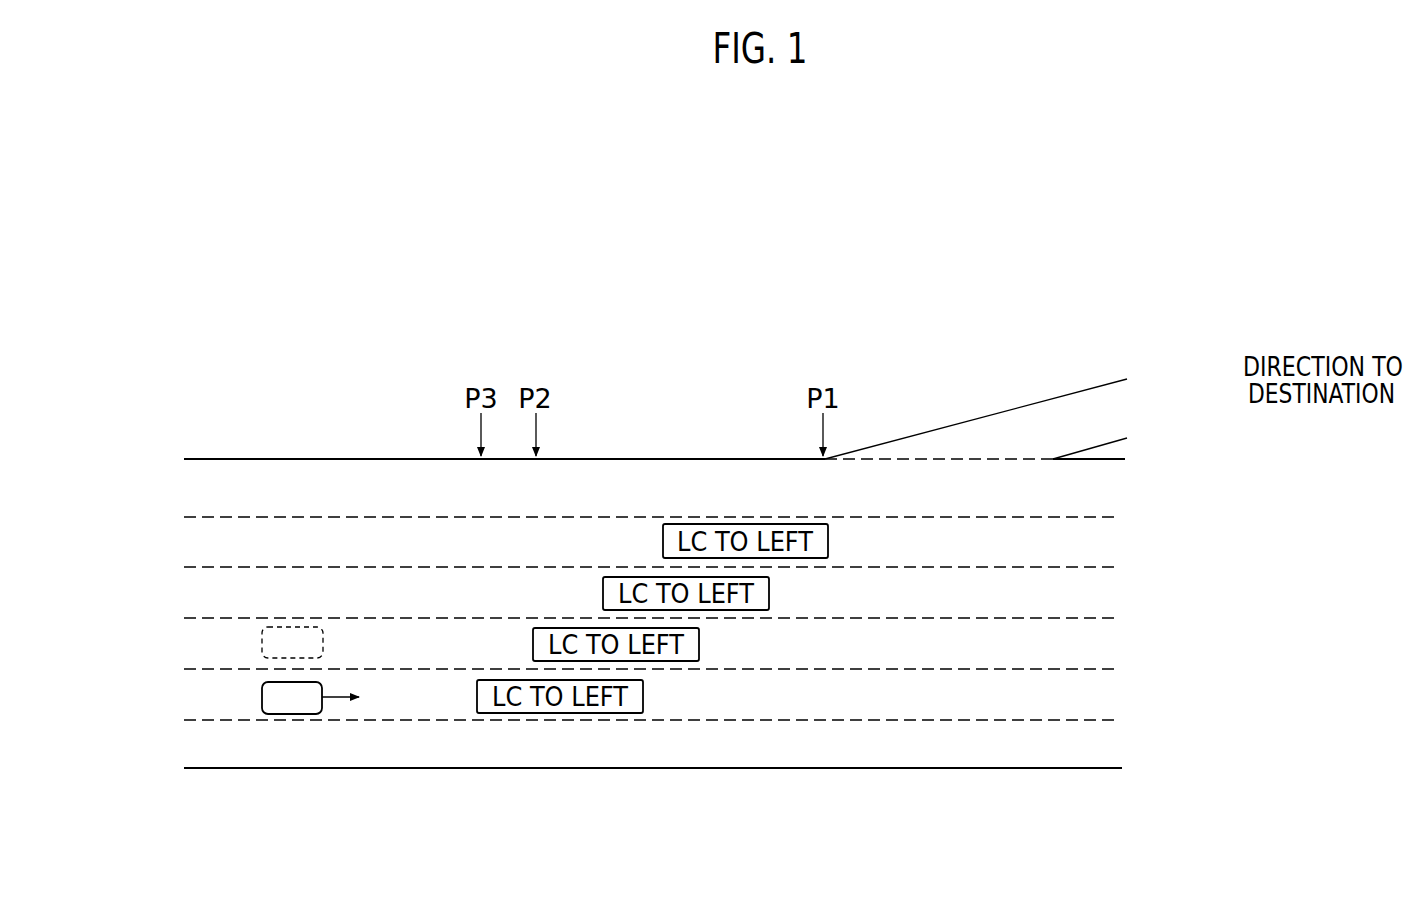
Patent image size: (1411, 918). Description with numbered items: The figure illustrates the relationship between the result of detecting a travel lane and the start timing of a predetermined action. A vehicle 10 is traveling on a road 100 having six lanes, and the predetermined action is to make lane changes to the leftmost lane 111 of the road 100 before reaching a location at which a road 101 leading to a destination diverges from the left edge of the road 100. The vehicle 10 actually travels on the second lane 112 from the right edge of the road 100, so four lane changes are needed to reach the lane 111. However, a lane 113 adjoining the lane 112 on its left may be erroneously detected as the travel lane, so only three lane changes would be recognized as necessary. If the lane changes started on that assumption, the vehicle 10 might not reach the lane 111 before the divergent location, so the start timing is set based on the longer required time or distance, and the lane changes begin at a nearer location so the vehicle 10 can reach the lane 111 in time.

The vehicle 10 is at (290, 714).
The road 100 is at (1142, 461).
The road leading to a destination 101 is at (1147, 367).
The leftmost lane 111 is at (213, 489).
The second lane 112 is at (213, 695).
The lane 113 is at (213, 645).